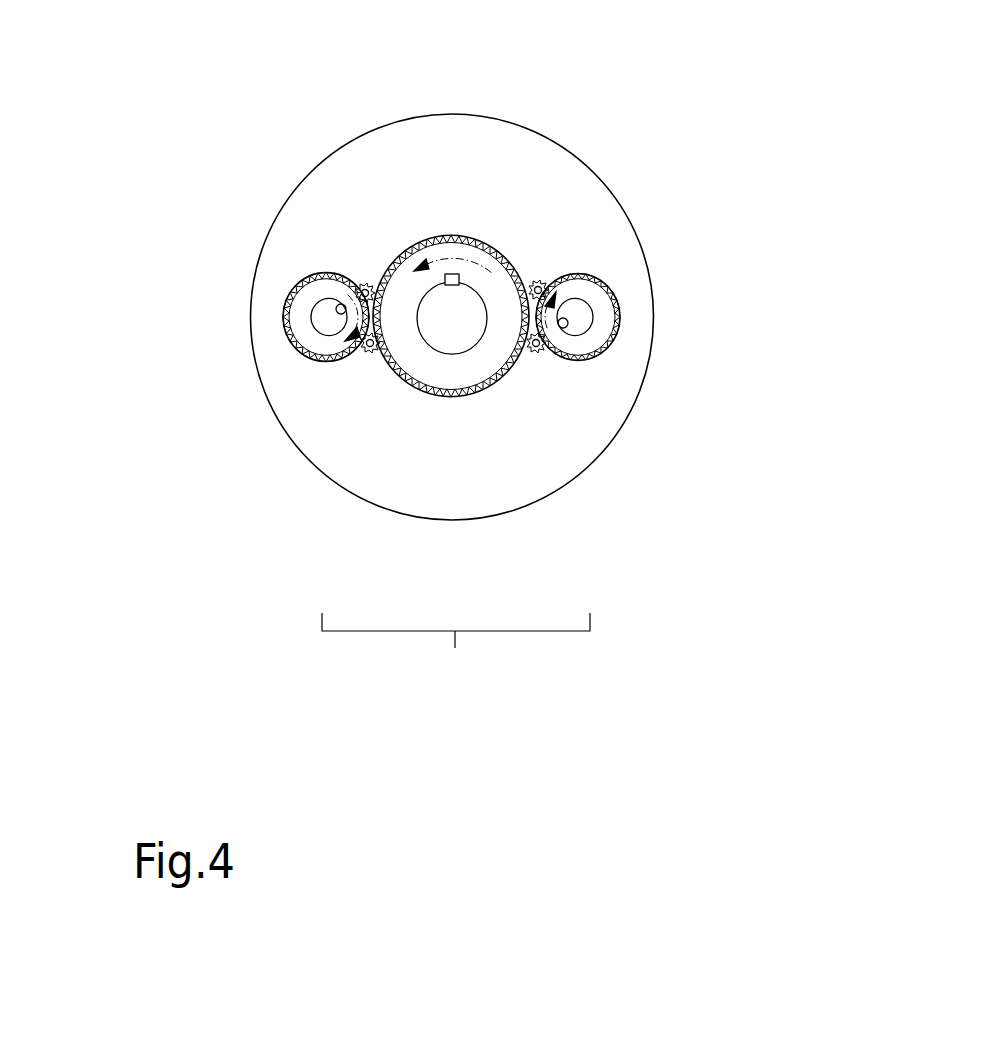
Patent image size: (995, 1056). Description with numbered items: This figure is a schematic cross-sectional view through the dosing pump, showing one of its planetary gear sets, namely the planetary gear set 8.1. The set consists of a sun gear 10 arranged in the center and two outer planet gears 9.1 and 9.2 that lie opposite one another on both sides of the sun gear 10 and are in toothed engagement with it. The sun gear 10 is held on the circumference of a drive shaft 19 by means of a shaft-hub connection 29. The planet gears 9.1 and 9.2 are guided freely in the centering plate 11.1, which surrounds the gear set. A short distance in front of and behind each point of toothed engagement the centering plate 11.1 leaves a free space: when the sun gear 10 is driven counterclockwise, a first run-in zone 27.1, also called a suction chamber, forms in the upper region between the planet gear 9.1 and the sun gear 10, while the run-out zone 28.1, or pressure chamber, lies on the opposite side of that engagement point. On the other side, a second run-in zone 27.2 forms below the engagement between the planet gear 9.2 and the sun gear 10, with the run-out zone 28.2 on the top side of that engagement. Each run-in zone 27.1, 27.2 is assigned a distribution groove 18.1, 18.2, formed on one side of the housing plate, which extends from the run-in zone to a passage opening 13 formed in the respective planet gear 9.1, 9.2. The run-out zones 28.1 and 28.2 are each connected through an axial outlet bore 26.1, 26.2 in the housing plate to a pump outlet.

The planetary gear set 8.1 is at (456, 656).
The planet gear 9.1 is at (323, 345).
The planet gear 9.2 is at (572, 343).
The sun gear 10 is at (460, 368).
The centering plate 11.1 is at (500, 143).
The passage opening 13 is at (329, 317).
The distribution groove 18.1 is at (287, 300).
The distribution groove 18.2 is at (597, 357).
The drive shaft 19 is at (470, 304).
The axial outlet bore 26.1 is at (372, 350).
The axial outlet bore 26.2 is at (540, 283).
The first run-in zone 27.1 is at (360, 287).
The second run-in zone 27.2 is at (534, 350).
The run-out zone 28.1 is at (369, 350).
The run-out zone 28.2 is at (562, 289).
The shaft-hub connection 29 is at (459, 276).